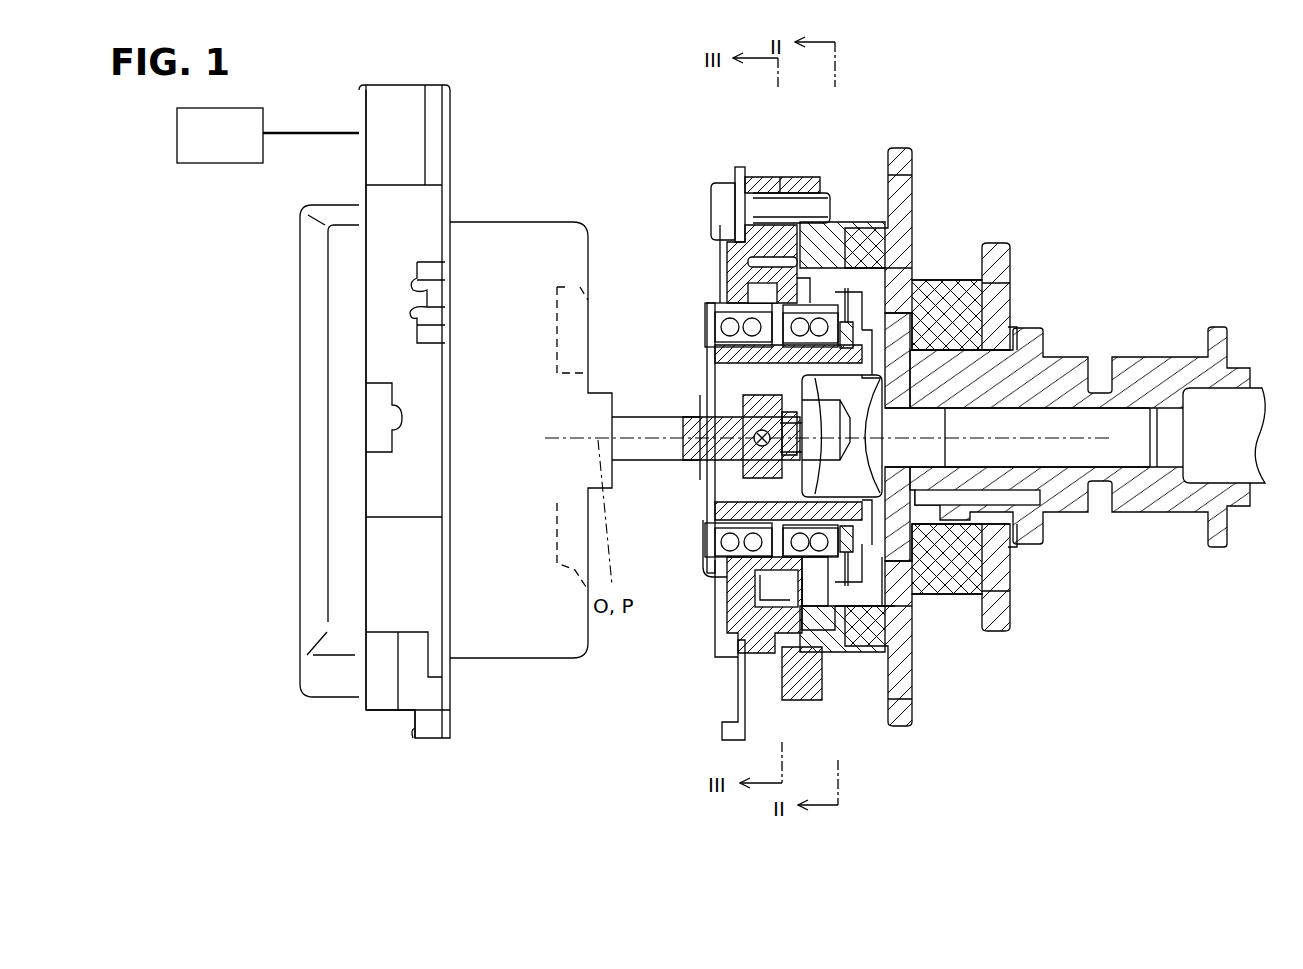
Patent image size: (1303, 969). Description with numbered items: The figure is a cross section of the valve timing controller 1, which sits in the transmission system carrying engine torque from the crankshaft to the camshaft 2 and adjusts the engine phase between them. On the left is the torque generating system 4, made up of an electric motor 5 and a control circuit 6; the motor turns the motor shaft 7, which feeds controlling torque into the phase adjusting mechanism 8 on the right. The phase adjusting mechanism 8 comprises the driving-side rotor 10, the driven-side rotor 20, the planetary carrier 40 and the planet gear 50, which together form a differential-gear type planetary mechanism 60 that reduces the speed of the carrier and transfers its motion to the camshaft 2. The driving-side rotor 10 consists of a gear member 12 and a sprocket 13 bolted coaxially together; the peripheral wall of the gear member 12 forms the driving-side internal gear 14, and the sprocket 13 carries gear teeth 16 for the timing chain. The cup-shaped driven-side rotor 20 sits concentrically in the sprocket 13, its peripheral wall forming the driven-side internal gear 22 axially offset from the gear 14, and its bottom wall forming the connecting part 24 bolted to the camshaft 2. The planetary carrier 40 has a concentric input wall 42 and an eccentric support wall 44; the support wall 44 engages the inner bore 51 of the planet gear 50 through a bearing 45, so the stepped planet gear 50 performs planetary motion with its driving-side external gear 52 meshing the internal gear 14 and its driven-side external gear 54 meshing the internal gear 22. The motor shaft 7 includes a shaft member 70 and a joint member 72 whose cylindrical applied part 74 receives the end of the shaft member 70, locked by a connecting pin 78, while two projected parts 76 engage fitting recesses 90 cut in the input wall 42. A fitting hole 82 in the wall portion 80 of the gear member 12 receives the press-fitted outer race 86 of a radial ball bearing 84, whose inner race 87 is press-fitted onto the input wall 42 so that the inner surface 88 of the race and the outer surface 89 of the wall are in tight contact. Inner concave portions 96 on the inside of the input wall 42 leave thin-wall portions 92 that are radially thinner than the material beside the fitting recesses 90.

The valve timing controller 1 is at (657, 740).
The camshaft 2 is at (1245, 385).
The torque generating system 4 is at (542, 700).
The electric motor 5 is at (510, 222).
The control circuit 6 is at (215, 163).
The motor shaft 7 is at (690, 532).
The phase adjusting mechanism 8 is at (713, 714).
The driving-side rotor 10 is at (783, 160).
The gear member 12 is at (760, 178).
The sprocket 13 is at (790, 185).
The driving-side internal gear 14 is at (758, 660).
The gear teeth 16 is at (905, 160).
The driven-side rotor 20 is at (913, 277).
The driven-side internal gear 22 is at (847, 585).
The connecting part 24 is at (1005, 262).
The planetary carrier 40 is at (943, 560).
The input wall 42 is at (713, 338).
The support wall 44 is at (890, 278).
The bearing 45 is at (845, 298).
The planet gear 50 is at (862, 298).
The inner bore 51 is at (825, 300).
The driving-side external gear 52 is at (787, 600).
The driven-side external gear 54 is at (843, 603).
The planetary mechanism 60 is at (930, 590).
The shaft member 70 is at (648, 462).
The joint member 72 is at (720, 475).
The applied part 74 is at (722, 357).
The projected part 76 is at (697, 415).
The connecting pin 78 is at (745, 405).
The wall portion 80 is at (722, 250).
The fitting hole 82 is at (740, 272).
The radial ball bearing 84 is at (648, 228).
The outer race 86 is at (758, 283).
The inner race 87 is at (763, 307).
The inner surface 88 is at (735, 605).
The outer surface 89 is at (712, 552).
The fitting recess 90 is at (1045, 375).
The thin-wall portion 92 is at (737, 283).
The inner concave portion 96 is at (1000, 320).